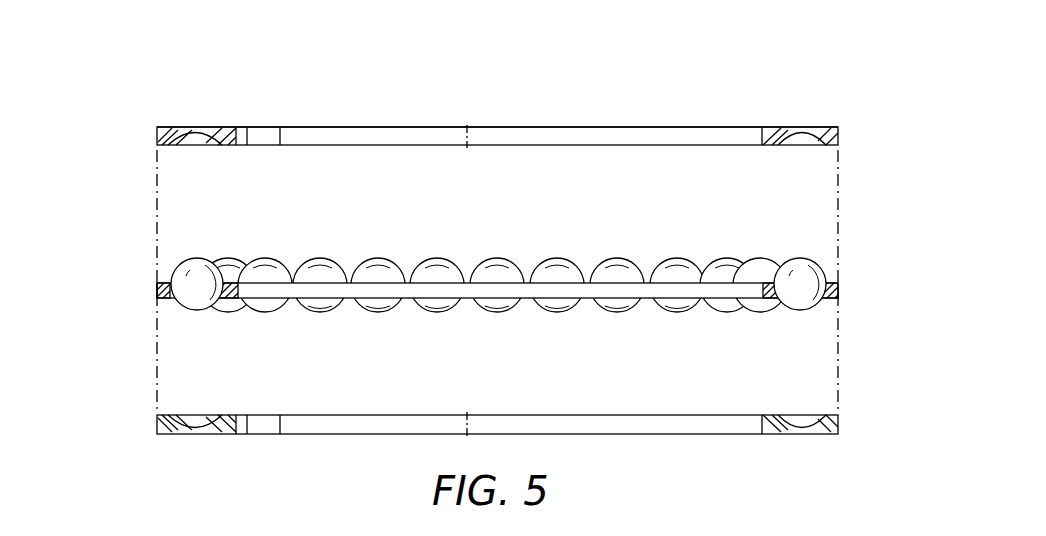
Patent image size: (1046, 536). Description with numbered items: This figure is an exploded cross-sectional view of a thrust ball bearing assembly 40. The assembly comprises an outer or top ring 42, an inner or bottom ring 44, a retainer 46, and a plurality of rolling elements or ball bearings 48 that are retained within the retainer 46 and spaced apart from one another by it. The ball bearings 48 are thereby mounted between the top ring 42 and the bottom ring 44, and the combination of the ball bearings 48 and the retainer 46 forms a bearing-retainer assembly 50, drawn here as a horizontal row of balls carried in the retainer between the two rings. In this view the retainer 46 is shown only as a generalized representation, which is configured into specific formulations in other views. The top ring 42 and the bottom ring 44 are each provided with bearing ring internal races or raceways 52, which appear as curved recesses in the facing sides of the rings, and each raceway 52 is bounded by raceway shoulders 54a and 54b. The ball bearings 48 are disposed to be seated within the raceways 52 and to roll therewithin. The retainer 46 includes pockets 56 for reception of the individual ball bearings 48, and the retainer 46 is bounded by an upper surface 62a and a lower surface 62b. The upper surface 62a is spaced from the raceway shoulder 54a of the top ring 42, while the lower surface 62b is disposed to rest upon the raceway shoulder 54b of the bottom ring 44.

The thrust ball bearing assembly 40 is at (382, 120).
The outer or top ring 42 is at (787, 124).
The inner or bottom ring 44 is at (801, 440).
The retainer 46 is at (150, 296).
The ball bearings 48 is at (322, 257).
The bearing-retainer assembly 50 is at (185, 245).
The raceways 52 is at (198, 140).
The raceway shoulder 54a is at (170, 146).
The raceway shoulder 54b is at (172, 416).
The pockets 56 is at (816, 291).
The upper surface 62a is at (161, 283).
The lower surface 62b is at (161, 298).